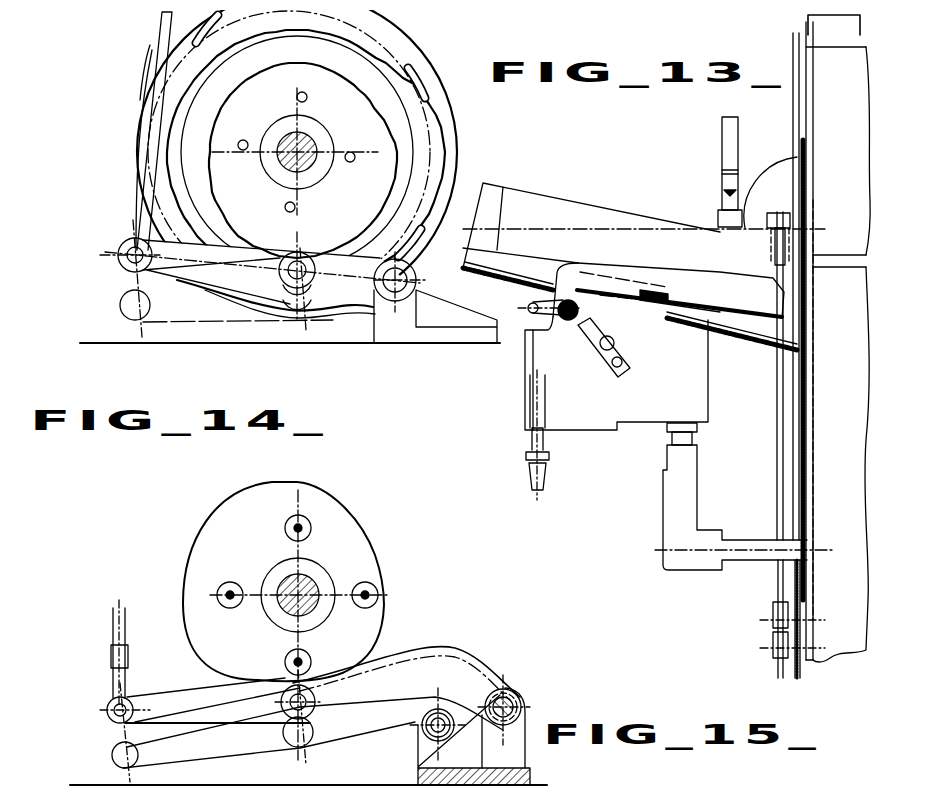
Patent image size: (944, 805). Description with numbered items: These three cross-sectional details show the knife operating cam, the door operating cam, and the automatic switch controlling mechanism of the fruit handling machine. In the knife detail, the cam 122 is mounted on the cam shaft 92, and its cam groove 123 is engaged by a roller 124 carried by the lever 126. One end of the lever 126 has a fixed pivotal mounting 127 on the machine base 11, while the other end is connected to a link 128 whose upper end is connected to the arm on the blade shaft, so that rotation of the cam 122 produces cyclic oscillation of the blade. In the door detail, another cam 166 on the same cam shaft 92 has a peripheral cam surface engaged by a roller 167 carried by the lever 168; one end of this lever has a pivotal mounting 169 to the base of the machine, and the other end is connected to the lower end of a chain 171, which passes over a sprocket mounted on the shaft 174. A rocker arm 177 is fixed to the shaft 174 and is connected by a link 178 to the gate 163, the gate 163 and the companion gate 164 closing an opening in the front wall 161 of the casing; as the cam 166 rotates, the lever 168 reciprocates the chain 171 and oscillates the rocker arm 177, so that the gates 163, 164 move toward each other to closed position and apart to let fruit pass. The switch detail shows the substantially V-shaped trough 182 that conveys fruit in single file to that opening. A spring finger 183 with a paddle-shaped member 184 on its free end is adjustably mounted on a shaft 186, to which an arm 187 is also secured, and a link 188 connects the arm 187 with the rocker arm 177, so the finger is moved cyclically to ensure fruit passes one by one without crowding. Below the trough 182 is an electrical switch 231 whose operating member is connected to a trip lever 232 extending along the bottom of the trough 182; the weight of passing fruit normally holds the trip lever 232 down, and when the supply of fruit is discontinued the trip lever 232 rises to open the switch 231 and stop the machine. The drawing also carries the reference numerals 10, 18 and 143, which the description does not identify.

In FIG. 13, the machine frame 10 is at (840, 648).
In FIG. 14, the machine base 11 is at (330, 344).
In FIG. 15, the machine base 11 is at (306, 786).
In FIG. 13, the top of panel 18 is at (808, 22).
In FIG. 14, the cam shaft 92 is at (308, 142).
In FIG. 15, the cam shaft 92 is at (310, 580).
In FIG. 14, the cam 122 is at (137, 137).
In FIG. 14, the cam groove 123 is at (178, 100).
In FIG. 14, the roller 124 is at (303, 257).
In FIG. 14, the lever 126 is at (243, 245).
In FIG. 14, the fixed pivotal mounting 127 is at (393, 282).
In FIG. 14, the link 128 is at (165, 40).
In FIG. 15, the pivot pin 143 is at (430, 733).
In FIG. 13, the front wall 161 is at (811, 97).
In FIG. 13, the gate 163 is at (806, 325).
In FIG. 13, the gate 164 is at (806, 165).
In FIG. 15, the cam 166 is at (344, 518).
In FIG. 15, the roller 167 is at (316, 700).
In FIG. 15, the lever 168 is at (445, 652).
In FIG. 15, the pivotal mounting 169 is at (510, 696).
In FIG. 15, the chain 171 is at (111, 655).
In FIG. 13, the shaft 174 is at (772, 614).
In FIG. 13, the rocker arm 177 is at (782, 632).
In FIG. 13, the link 178 is at (812, 526).
In FIG. 13, the V-shaped trough 182 is at (541, 210).
In FIG. 13, the spring finger 183 is at (728, 200).
In FIG. 13, the paddle-shaped member 184 is at (724, 152).
In FIG. 13, the shaft 186 is at (670, 224).
In FIG. 13, the arm 187 is at (772, 248).
In FIG. 13, the link 188 is at (778, 412).
In FIG. 13, the electrical switch 231 is at (607, 420).
In FIG. 13, the trip lever 232 is at (615, 258).